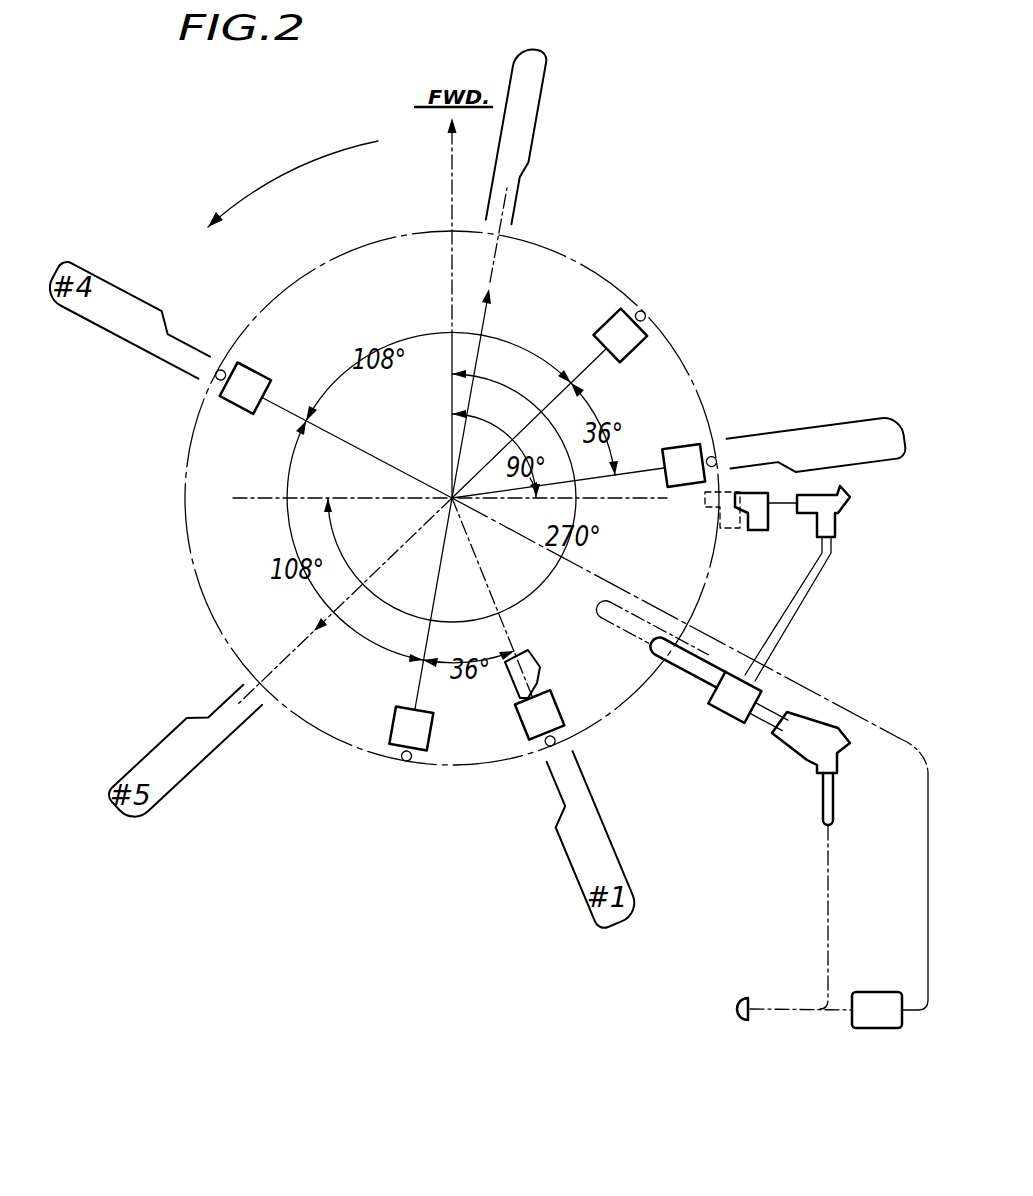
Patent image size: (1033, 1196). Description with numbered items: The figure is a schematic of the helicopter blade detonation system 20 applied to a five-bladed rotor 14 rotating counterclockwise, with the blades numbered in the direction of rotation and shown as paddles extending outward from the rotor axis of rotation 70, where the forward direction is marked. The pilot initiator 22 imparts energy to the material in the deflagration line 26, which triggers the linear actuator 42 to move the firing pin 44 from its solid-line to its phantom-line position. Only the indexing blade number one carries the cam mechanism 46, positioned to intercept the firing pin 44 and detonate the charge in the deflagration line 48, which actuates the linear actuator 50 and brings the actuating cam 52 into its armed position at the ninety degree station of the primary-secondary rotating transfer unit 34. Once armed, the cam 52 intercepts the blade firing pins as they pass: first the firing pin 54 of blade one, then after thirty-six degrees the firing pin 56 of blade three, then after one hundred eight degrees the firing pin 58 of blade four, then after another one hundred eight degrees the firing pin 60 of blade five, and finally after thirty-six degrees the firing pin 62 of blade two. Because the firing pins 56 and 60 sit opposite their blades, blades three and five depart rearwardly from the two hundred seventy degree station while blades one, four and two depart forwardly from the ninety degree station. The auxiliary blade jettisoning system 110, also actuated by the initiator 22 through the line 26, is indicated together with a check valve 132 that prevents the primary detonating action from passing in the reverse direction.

The rotor 14 is at (612, 119).
The helicopter blade detonation system 20 is at (767, 266).
The primary-secondary rotating transfer unit 34 is at (594, 270).
The axis of rotation 70 is at (451, 496).
The firing pin of blade 4 58 is at (262, 380).
The firing pin of blade 5 60 is at (643, 343).
The firing pin of blade 2 62 is at (683, 448).
The firing pin of blade 3 56 is at (392, 738).
The firing pin of blade 1 54 is at (558, 703).
The cam mechanism 46 is at (535, 663).
The deflagration line 26 is at (838, 703).
The firing pin 44 is at (692, 664).
The linear actuator 42 is at (800, 746).
The deflagration line 48 is at (811, 583).
The linear actuator 50 is at (843, 493).
The actuating cam 52 is at (760, 532).
The pilot initiator 22 is at (733, 1010).
The check valve 132 is at (877, 1010).
The auxiliary blade jettisoning system 110 is at (922, 1013).